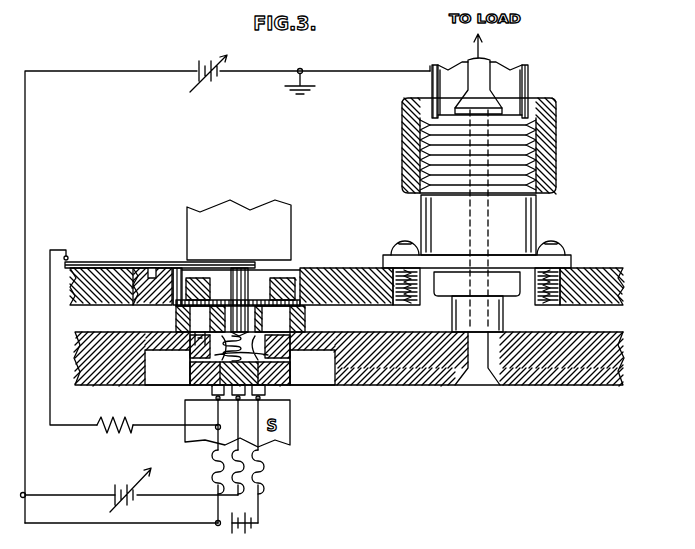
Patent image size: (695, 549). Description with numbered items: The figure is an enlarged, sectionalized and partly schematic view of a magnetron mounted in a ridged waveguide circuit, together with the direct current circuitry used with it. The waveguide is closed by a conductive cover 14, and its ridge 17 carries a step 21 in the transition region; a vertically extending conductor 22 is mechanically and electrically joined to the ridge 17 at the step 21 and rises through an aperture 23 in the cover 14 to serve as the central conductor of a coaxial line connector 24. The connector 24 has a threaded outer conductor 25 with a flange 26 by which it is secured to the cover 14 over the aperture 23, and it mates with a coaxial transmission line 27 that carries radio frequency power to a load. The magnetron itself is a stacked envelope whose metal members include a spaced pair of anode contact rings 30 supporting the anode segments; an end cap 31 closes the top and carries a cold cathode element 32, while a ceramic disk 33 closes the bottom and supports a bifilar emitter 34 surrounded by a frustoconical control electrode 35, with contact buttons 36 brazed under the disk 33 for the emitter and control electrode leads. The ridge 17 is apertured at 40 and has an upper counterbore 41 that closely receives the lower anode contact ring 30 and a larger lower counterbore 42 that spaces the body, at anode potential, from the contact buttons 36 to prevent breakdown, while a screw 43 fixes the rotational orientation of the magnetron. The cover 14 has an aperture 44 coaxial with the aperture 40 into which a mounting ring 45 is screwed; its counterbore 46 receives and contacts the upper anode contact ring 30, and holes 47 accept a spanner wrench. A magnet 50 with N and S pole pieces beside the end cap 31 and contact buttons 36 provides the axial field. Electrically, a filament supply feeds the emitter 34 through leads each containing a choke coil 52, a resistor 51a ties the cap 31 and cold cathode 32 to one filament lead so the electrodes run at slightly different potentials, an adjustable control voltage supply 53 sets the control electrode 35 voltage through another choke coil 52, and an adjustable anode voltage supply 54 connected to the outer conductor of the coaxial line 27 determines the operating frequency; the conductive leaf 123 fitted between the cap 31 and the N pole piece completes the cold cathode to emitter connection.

The cover 14 is at (628, 283).
The ridge 17 is at (385, 318).
The step 21 is at (455, 318).
The conductor 22 is at (490, 335).
The aperture 23 is at (530, 302).
The coaxial line connector 24 is at (540, 212).
The threaded outer conductor 25 is at (528, 155).
The flange 26 is at (572, 262).
The coaxial transmission line 27 is at (557, 126).
The anode contact rings 30 is at (290, 340).
The end cap 31 is at (181, 270).
The cold cathode element 32 is at (252, 270).
The ceramic disk 33 is at (278, 382).
The emitter 34 is at (192, 386).
The control electrode 35 is at (282, 356).
The contact buttons 36 is at (240, 398).
The aperture 40 is at (190, 358).
The upper counterbore 41 is at (174, 322).
The lower counterbore 42 is at (333, 382).
The screw 43 is at (165, 343).
The aperture 44 is at (116, 270).
The mounting ring 45 is at (333, 270).
The counterbore 46 is at (306, 312).
The holes 47 is at (151, 272).
The magnet 50 is at (237, 200).
The resistor 51a is at (114, 434).
The choke coil 52 is at (262, 488).
The control voltage supply 53 is at (140, 510).
The anode voltage supply 54 is at (207, 83).
The conductive leaf 123 is at (82, 262).